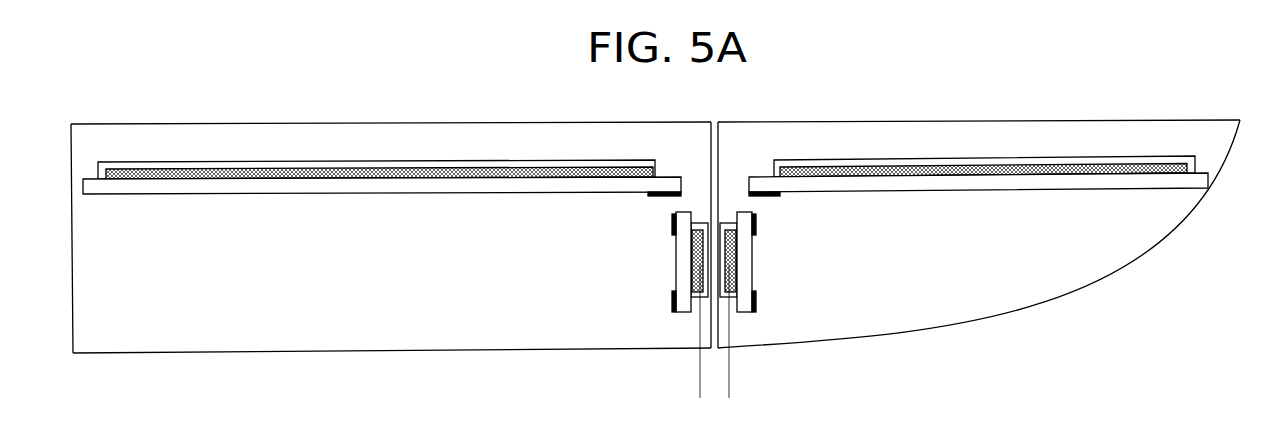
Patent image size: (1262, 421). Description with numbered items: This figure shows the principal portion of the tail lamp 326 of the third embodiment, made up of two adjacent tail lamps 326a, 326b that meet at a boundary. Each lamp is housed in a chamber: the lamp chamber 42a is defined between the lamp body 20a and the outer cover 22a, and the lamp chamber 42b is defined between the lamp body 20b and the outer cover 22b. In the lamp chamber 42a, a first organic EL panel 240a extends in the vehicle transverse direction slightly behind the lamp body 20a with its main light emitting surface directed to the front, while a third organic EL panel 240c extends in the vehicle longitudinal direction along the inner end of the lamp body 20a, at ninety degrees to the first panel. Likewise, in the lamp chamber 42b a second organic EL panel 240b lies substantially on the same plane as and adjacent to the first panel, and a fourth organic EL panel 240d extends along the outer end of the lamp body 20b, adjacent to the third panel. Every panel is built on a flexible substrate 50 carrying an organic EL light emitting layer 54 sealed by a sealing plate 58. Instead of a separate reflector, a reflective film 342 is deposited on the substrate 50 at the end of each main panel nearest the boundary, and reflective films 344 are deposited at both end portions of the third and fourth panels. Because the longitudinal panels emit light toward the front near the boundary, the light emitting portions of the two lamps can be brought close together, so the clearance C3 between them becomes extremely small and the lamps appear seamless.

The tail lamp 326 is at (666, 222).
The tail lamp 326a is at (990, 191).
The tail lamp 326b is at (391, 226).
The lamp body 20a is at (920, 123).
The lamp body 20b is at (515, 124).
The outer cover 22a is at (1118, 270).
The outer cover 22b is at (197, 353).
The lamp chamber 42a is at (987, 151).
The lamp chamber 42b is at (350, 153).
The substrate 50 is at (467, 188).
The organic EL light emitting layer 54 is at (437, 178).
The sealing plate 58 is at (403, 173).
The first organic EL panel 240a is at (893, 192).
The second organic EL panel 240b is at (518, 192).
The third organic EL panel 240c is at (747, 212).
The fourth organic EL panel 240d is at (681, 212).
The reflective film 342 is at (655, 197).
The reflective film 344 is at (673, 217).
The clearance C3 is at (760, 393).